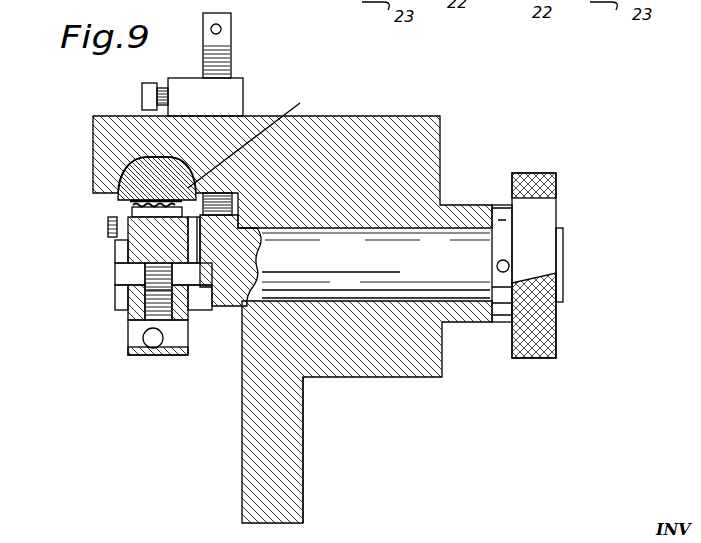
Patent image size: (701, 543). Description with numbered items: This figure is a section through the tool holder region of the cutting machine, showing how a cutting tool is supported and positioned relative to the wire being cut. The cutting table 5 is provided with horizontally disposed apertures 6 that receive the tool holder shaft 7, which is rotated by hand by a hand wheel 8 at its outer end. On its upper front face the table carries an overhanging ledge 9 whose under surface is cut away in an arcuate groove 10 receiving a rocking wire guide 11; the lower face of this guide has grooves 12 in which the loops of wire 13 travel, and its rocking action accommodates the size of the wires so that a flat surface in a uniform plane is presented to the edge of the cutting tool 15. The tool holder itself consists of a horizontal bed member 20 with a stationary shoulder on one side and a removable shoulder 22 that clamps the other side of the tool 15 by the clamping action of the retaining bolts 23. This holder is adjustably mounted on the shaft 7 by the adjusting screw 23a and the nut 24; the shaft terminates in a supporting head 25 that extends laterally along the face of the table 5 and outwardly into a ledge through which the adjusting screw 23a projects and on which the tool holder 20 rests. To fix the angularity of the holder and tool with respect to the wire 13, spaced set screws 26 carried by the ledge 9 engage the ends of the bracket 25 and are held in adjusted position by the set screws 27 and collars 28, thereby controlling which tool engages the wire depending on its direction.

The cutting table 5 is at (336, 357).
The horizontally disposed apertures 6 is at (400, 303).
The tool holder shaft 7 is at (450, 246).
The hand wheel 8 is at (538, 175).
The overhanging ledge 9 is at (95, 176).
The arcuate groove 10 is at (142, 158).
The rocking wire guide 11 is at (178, 163).
The grooves 12 is at (258, 139).
The wire 13 is at (128, 203).
The cutting tool 15 is at (133, 212).
The horizontal bed member 20 is at (142, 250).
The removable shoulder 22 is at (108, 229).
The retaining bolts 23 is at (110, 238).
The adjusting screw 23a is at (148, 293).
The nut 24 is at (140, 338).
The supporting head 25 is at (219, 306).
The set screws 26 is at (231, 40).
The set screws 27 is at (143, 92).
The collars 28 is at (238, 92).